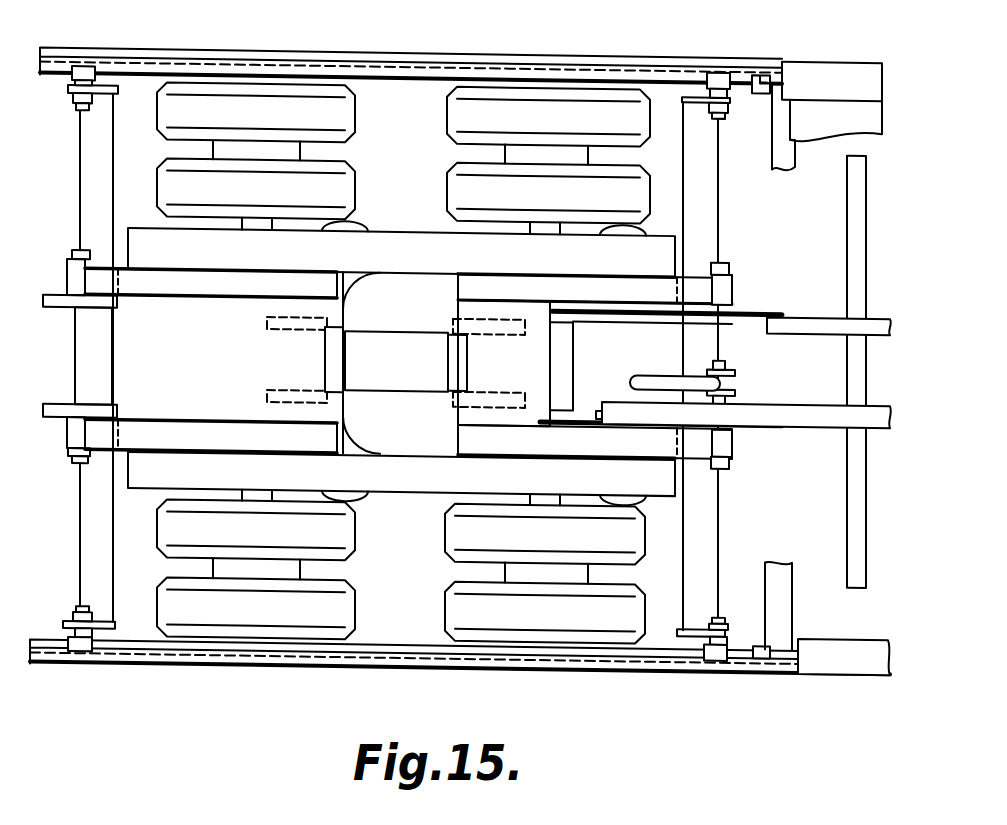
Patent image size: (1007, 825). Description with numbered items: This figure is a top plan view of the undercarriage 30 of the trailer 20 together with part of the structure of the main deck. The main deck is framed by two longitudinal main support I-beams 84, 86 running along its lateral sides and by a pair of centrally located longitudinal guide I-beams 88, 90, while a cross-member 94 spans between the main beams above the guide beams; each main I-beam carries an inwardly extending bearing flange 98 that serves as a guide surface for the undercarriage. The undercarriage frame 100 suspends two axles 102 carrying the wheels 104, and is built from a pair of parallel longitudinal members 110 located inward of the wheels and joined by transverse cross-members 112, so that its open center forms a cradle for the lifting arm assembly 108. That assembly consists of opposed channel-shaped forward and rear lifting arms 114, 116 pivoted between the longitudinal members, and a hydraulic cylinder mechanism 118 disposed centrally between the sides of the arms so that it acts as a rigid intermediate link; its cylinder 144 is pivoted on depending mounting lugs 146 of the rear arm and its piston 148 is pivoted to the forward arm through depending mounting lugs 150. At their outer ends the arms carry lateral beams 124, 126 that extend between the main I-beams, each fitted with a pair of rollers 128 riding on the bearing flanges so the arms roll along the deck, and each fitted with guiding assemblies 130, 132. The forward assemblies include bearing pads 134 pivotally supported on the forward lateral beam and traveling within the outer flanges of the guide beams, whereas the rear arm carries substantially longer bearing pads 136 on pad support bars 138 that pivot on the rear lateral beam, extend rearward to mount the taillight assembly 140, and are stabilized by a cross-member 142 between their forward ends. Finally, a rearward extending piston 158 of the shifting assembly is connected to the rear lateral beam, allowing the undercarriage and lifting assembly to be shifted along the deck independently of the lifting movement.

The trailer 20 is at (596, 674).
The undercarriage 30 is at (442, 88).
The main support I-beam 84 is at (262, 668).
The main support I-beam 86 is at (204, 57).
The longitudinal I-beam 88 is at (748, 408).
The longitudinal I-beam 90 is at (801, 322).
The cross-member 94 is at (795, 150).
The bearing flange 98 is at (758, 63).
The frame 100 is at (438, 226).
The axle 102 is at (252, 212).
The wheels 104 is at (446, 166).
The lifting arm assembly 108 is at (733, 479).
The longitudinal member 110 is at (680, 231).
The transverse cross-member 112 is at (150, 265).
The forward lifting arm 114 is at (207, 430).
The rear lifting arm 116 is at (548, 248).
The hydraulic cylinder mechanism 118 is at (391, 325).
The lateral beam 124 is at (82, 176).
The lateral beam 126 is at (718, 176).
The roller 128 is at (83, 66).
The guiding assembly 130 is at (51, 309).
The guiding assembly 132 is at (737, 291).
The bearing pad 134 is at (112, 398).
The bearing pad 136 is at (590, 401).
The pad support bar 138 is at (790, 298).
The taillight assembly 140 is at (868, 226).
The cross-member 142 is at (583, 333).
The cylinder 144 is at (397, 375).
The mounting lugs 146 is at (505, 333).
The piston 148 is at (343, 356).
The mounting lugs 150 is at (300, 339).
The rearward extending piston 158 is at (668, 342).